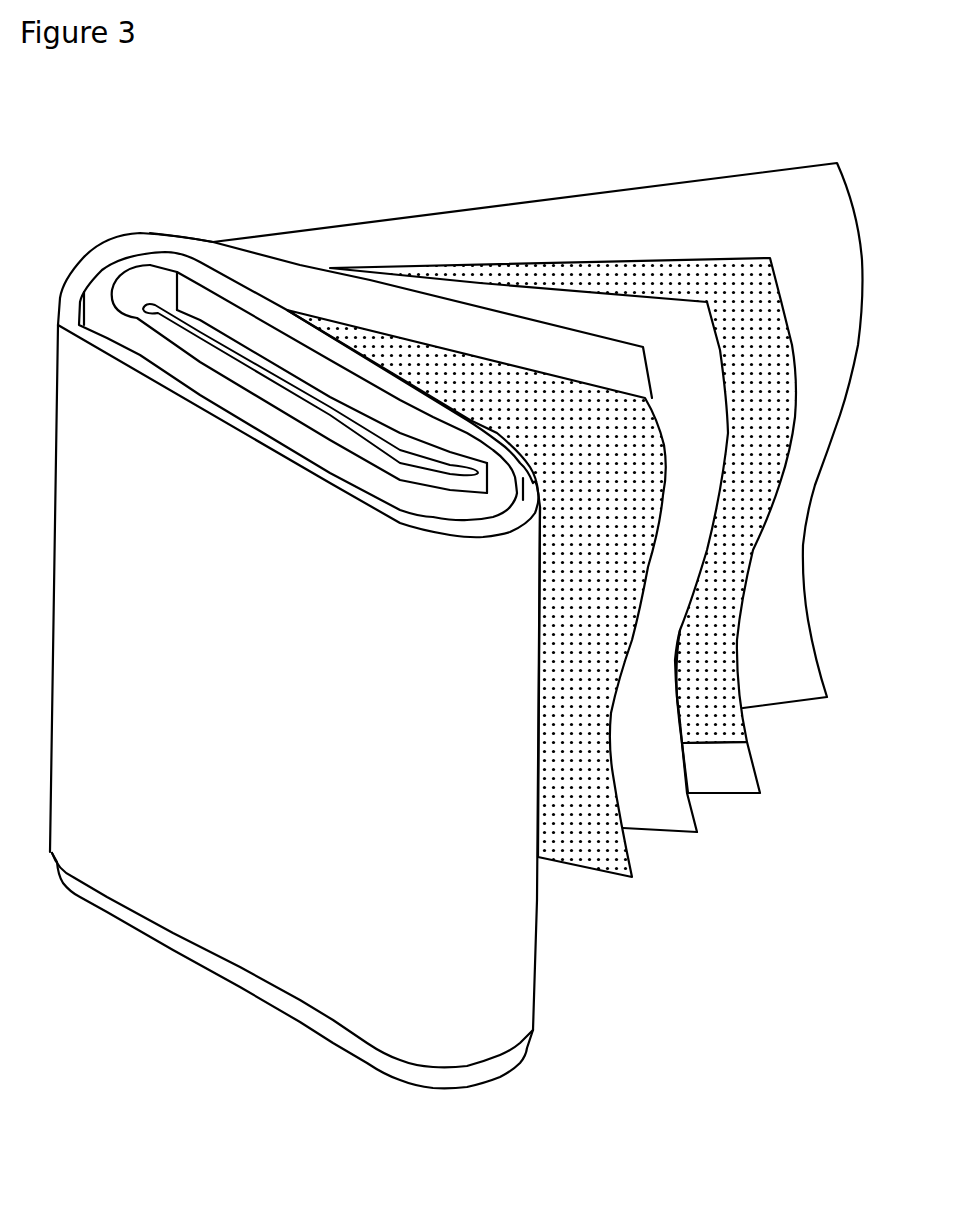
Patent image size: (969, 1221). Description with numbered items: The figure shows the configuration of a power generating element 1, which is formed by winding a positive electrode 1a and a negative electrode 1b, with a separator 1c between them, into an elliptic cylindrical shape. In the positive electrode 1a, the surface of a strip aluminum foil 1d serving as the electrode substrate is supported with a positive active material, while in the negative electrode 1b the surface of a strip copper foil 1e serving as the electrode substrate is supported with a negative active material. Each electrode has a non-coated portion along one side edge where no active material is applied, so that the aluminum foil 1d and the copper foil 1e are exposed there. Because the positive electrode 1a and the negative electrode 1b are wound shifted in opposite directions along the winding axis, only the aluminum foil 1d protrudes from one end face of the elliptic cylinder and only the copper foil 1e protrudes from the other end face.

The power generating element 1 is at (201, 976).
The positive electrode 1a is at (598, 857).
The negative electrode 1b is at (735, 262).
The separator 1c is at (792, 179).
The aluminum foil 1d is at (490, 322).
The copper foil 1e is at (723, 780).